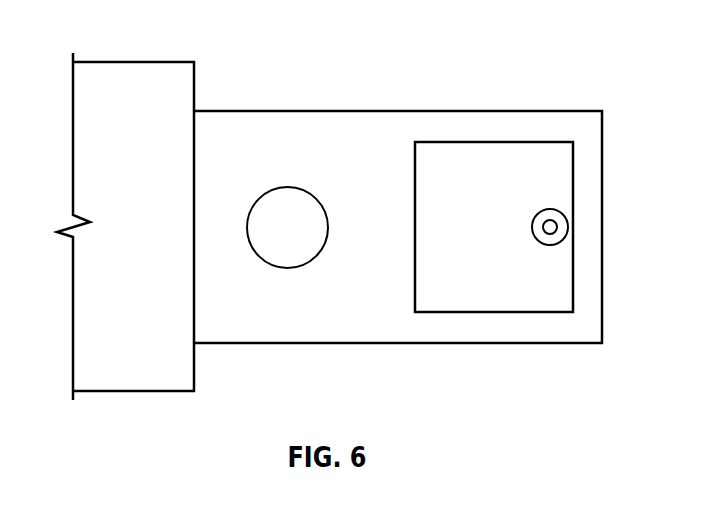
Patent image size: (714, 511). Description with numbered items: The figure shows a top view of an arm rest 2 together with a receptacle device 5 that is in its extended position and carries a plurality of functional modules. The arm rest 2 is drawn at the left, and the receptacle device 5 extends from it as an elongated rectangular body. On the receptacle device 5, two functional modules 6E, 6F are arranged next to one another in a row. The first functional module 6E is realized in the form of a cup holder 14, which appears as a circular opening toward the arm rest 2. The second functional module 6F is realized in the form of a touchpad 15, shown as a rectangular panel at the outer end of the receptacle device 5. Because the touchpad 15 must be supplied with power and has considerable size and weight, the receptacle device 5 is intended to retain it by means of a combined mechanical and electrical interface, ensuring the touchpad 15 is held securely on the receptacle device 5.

The arm rest 2 is at (122, 62).
The receptacle device 5 is at (580, 111).
The cup holder 14 is at (290, 187).
The touchpad 15 is at (493, 142).
The first functional module 6E is at (287, 283).
The second functional module 6F is at (490, 268).